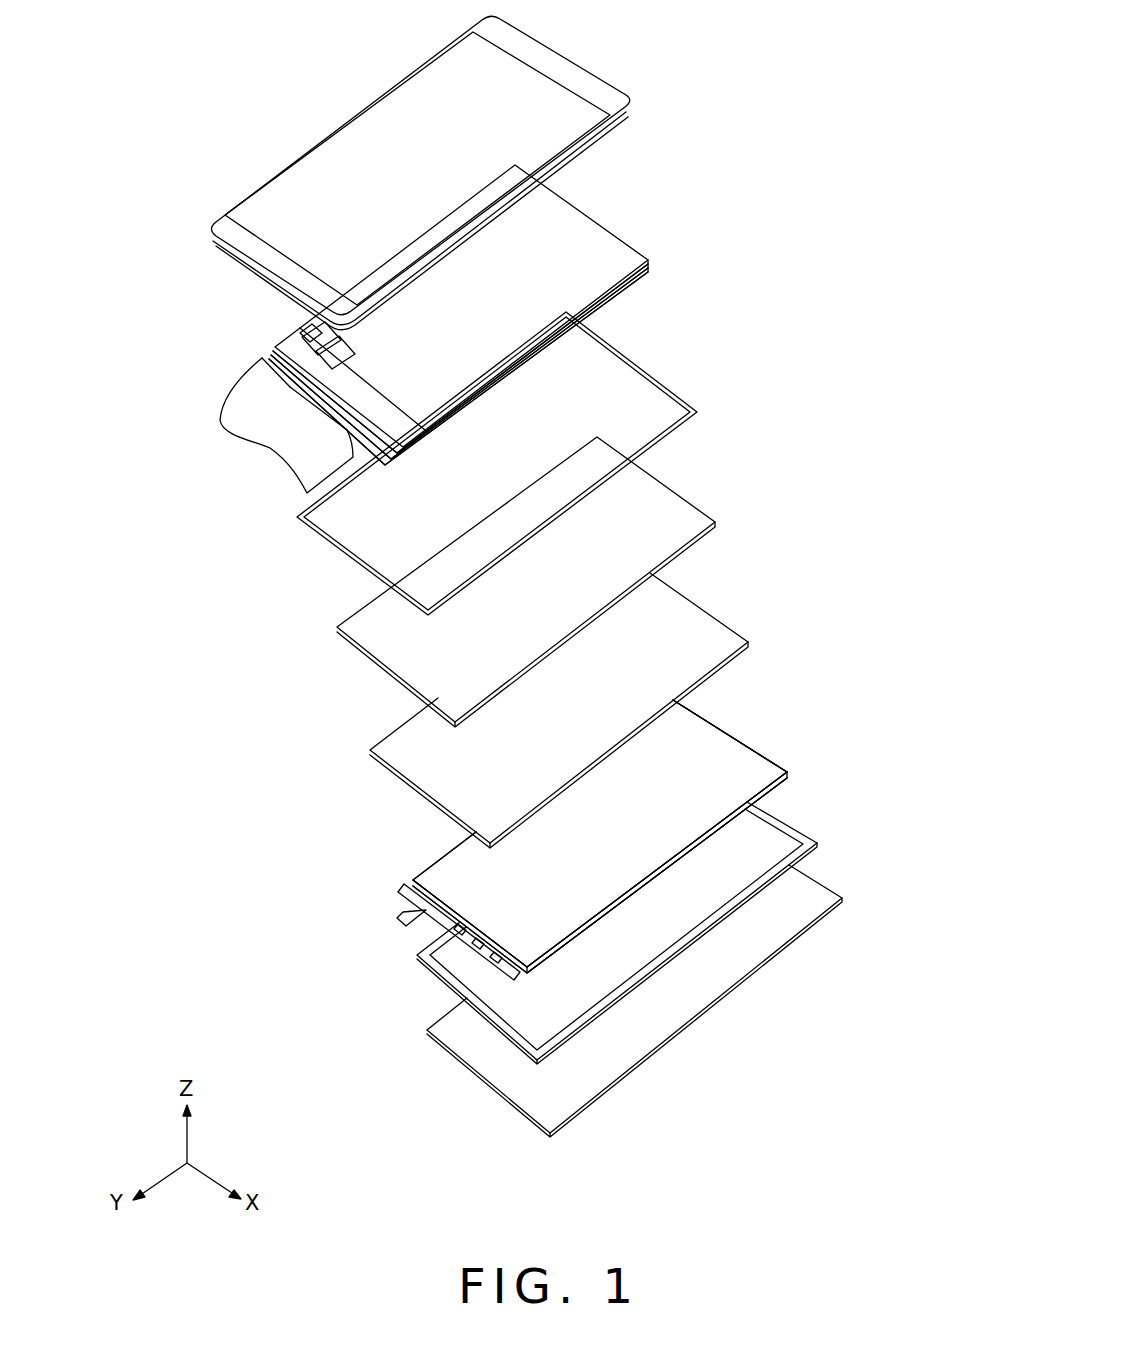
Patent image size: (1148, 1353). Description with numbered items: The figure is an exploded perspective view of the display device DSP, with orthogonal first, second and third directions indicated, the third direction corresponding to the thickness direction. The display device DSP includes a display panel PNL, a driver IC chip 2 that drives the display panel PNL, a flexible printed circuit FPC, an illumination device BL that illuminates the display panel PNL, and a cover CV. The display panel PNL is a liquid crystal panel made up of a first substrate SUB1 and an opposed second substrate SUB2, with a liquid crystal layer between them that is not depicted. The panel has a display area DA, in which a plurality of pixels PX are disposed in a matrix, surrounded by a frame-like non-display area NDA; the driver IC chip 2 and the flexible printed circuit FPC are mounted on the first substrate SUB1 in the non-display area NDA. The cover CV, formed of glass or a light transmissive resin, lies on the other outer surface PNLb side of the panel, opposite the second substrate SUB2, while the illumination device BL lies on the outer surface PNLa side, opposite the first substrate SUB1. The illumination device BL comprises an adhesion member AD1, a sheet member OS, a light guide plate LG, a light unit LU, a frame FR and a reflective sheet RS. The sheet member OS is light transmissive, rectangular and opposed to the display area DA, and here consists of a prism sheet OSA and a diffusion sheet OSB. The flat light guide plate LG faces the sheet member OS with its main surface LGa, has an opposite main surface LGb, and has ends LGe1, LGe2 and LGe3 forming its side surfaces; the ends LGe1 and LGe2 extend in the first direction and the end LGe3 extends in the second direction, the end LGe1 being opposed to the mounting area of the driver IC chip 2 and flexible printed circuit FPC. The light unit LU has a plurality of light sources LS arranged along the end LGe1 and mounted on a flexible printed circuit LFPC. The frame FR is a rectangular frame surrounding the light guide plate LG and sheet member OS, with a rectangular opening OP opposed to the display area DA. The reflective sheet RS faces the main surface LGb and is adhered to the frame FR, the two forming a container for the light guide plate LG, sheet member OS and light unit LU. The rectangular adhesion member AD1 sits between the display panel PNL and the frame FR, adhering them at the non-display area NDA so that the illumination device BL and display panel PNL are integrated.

The cover CV is at (604, 97).
The display device DSP is at (187, 269).
The pixels PX is at (300, 333).
The display area DA is at (568, 199).
The display panel PNL is at (512, 299).
The second substrate SUB2 is at (652, 258).
The first substrate SUB1 is at (652, 262).
The other outer surface PNLb is at (656, 268).
The outer surface PNLa is at (612, 297).
The non-display area NDA is at (300, 335).
The driver IC chip 2 is at (280, 352).
The flexible printed circuit FPC is at (253, 408).
The adhesion member AD1 is at (654, 378).
The sheet member OS is at (596, 642).
The prism sheet OSA is at (681, 486).
The diffusion sheet OSB is at (748, 608).
The light unit LU is at (373, 813).
The illumination device BL is at (282, 497).
The light guide plate LG is at (609, 883).
The main surface LGa is at (702, 735).
The main surface LGb is at (732, 820).
The end LGe1 is at (466, 955).
The end LGe2 is at (745, 734).
The end LGe3 is at (668, 870).
The flexible printed circuit LFPC is at (429, 924).
The light sources LS is at (420, 930).
The frame FR is at (643, 903).
The opening OP is at (769, 831).
The reflective sheet RS is at (820, 884).